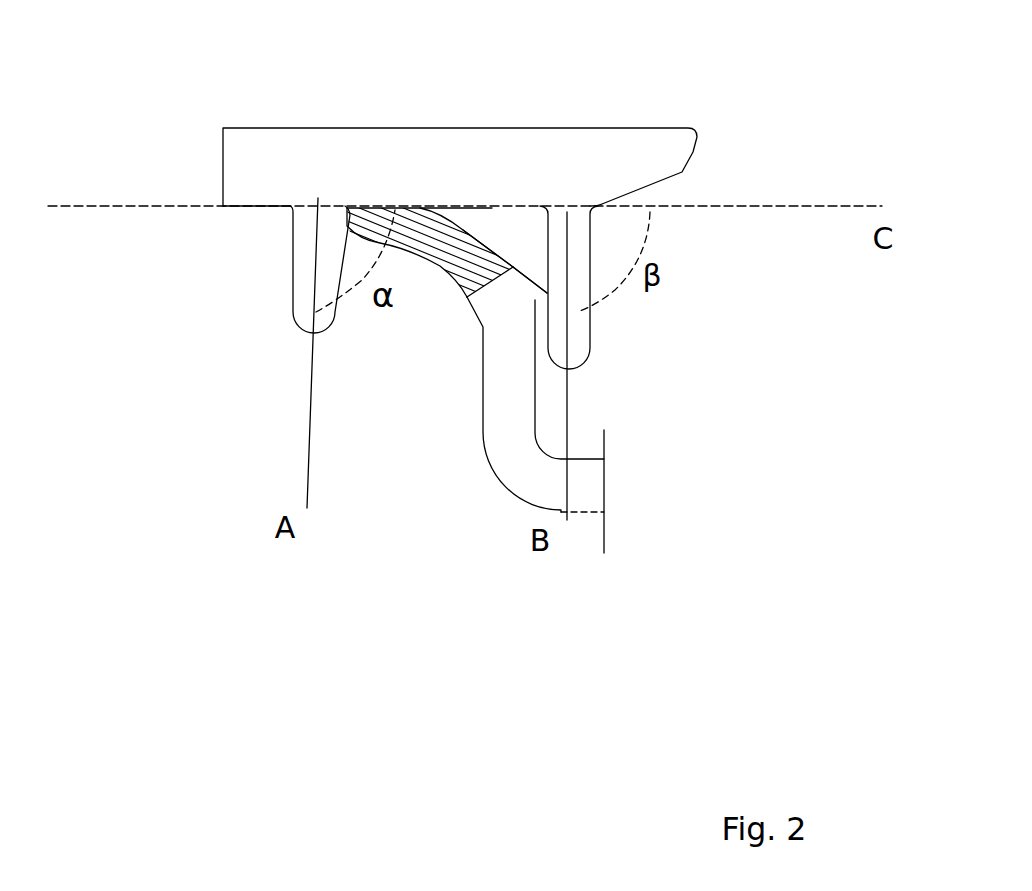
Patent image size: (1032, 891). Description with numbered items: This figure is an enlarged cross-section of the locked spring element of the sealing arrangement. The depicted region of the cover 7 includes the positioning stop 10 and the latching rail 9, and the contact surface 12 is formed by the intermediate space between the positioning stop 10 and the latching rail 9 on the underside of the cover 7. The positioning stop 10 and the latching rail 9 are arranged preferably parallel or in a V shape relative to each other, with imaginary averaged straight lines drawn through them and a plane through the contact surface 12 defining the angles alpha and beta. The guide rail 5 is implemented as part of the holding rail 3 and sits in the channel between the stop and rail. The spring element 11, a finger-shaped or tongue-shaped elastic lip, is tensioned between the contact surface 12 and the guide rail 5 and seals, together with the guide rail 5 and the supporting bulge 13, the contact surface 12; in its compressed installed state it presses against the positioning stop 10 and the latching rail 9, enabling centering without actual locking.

The holding rail 3 is at (593, 505).
The guide rail 5 is at (507, 292).
The cover 7 is at (438, 165).
The latching rail 9 is at (572, 287).
The positioning stop 10 is at (318, 276).
The spring element 11 is at (460, 253).
The contact surface 12 is at (492, 205).
The supporting bulge 13 is at (538, 298).